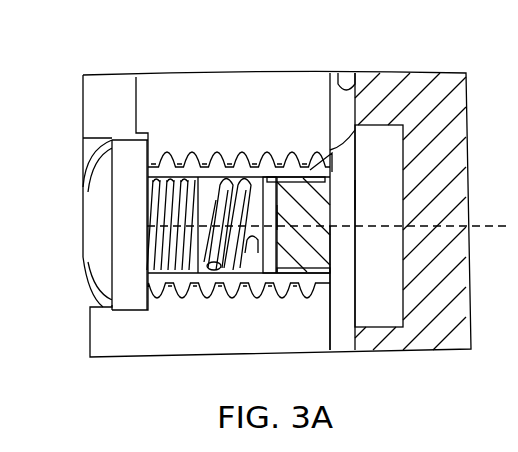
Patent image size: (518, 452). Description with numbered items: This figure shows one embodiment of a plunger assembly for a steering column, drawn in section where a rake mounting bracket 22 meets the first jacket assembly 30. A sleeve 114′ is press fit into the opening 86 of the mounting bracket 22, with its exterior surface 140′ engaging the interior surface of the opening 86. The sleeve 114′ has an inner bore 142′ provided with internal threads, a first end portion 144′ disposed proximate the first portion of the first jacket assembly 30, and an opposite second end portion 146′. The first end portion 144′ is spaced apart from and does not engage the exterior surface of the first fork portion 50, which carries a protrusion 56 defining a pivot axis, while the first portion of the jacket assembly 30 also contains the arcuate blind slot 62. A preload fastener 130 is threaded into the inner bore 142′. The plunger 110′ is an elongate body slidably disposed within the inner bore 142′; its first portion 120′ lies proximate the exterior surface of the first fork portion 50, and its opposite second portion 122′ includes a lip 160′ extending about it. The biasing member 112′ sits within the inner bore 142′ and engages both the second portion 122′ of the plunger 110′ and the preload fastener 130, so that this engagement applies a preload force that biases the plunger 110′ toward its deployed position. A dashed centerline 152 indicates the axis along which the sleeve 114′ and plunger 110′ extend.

The mounting bracket 22 is at (162, 97).
The first jacket assembly 30 is at (440, 83).
The first fork portion 50 is at (342, 72).
The protrusion 56 is at (347, 283).
The slot 62 is at (380, 315).
The opening 86 is at (310, 172).
The plunger 110′ is at (333, 197).
The biasing member 112′ is at (250, 197).
The sleeve 114′ is at (182, 300).
The first portion 120′ is at (355, 195).
The second portion 122′ is at (258, 245).
The preload fastener 130 is at (95, 262).
The exterior surface 140′ is at (193, 160).
The inner bore 142′ is at (220, 280).
The first end portion 144′ is at (337, 272).
The second end portion 146′ is at (167, 275).
The axis 152 is at (493, 226).
The lip 160′ is at (277, 218).